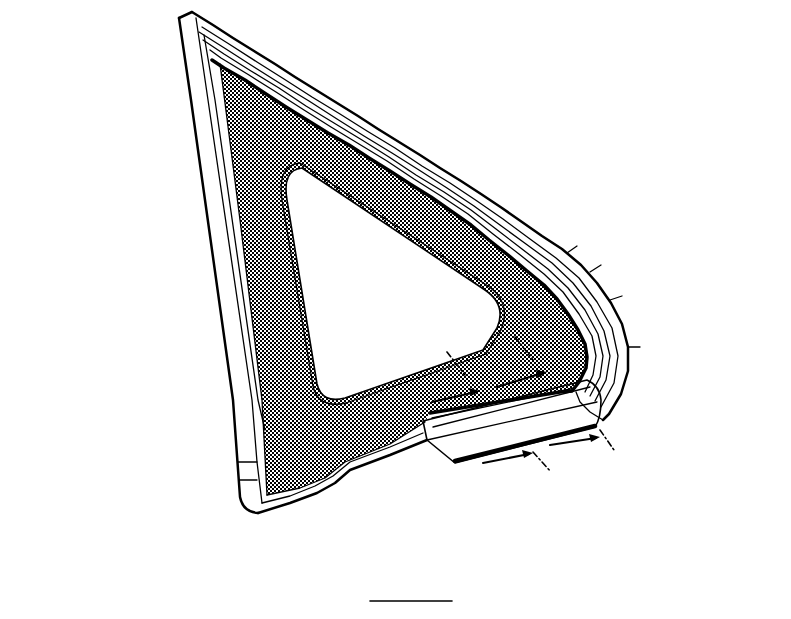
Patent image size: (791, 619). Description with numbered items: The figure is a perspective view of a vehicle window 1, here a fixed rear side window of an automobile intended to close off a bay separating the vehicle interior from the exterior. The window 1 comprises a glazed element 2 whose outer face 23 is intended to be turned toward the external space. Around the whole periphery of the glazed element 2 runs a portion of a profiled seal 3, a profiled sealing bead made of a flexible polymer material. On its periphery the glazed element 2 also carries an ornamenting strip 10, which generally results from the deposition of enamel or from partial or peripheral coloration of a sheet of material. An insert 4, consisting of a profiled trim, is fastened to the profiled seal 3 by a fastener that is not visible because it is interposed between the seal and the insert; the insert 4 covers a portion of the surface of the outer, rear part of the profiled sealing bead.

The window 1 is at (133, 137).
The glazed element 2 is at (382, 360).
The profiled seal 3 is at (623, 318).
The insert 4 is at (490, 438).
The ornamenting strip 10 is at (266, 238).
The outer face 23 is at (391, 306).